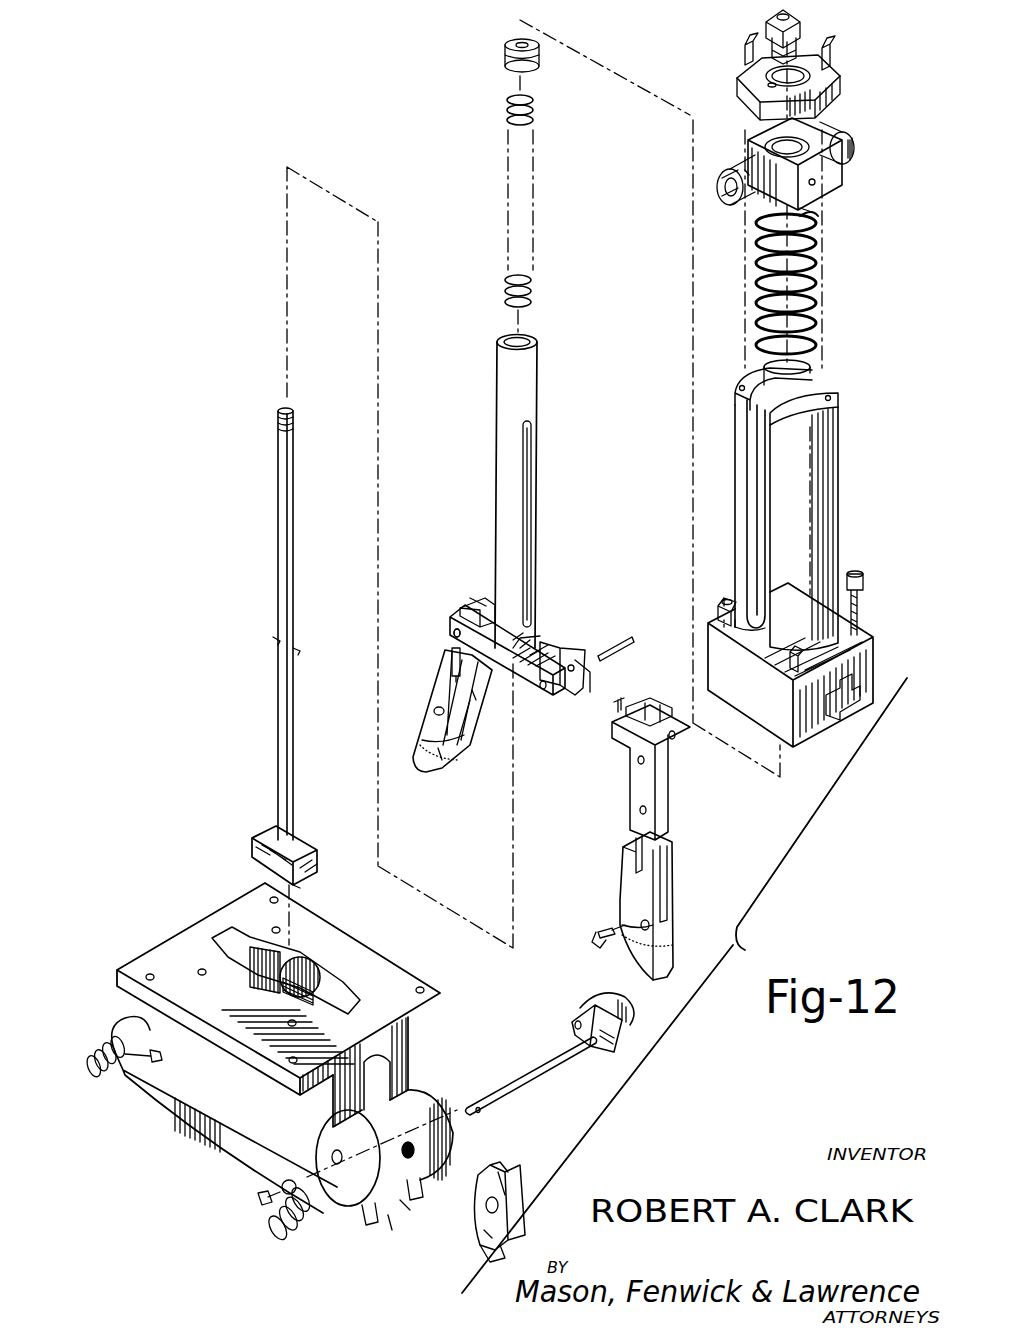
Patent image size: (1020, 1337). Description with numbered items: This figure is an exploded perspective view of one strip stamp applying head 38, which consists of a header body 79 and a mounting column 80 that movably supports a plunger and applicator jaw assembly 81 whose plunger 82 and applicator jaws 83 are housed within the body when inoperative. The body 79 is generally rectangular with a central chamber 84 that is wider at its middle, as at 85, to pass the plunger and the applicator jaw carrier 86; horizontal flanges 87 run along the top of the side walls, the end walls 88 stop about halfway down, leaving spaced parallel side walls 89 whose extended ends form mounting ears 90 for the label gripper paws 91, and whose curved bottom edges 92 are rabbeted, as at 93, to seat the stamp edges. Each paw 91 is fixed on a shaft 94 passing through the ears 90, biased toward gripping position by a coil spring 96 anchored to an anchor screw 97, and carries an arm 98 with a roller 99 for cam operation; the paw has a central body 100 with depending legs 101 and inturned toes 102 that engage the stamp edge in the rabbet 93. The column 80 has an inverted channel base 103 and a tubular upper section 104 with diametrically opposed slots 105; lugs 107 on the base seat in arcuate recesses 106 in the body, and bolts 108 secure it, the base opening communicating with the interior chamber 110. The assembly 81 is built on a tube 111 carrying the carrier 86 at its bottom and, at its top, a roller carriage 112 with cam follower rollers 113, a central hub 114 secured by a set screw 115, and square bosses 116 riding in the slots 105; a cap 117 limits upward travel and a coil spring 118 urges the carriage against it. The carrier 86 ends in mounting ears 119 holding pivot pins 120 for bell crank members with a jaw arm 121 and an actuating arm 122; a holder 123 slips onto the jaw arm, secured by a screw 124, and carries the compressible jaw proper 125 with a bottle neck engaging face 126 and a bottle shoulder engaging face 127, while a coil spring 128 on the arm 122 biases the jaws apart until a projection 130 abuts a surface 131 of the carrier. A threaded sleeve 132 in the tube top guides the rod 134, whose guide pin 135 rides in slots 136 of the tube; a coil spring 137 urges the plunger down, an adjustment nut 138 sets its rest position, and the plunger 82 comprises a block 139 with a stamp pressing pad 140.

The stamp applying head 38 is at (220, 650).
The header body 79 is at (427, 1056).
The mounting column 80 is at (852, 513).
The plunger and applicator jaw assembly 81 is at (470, 518).
The plunger 82 is at (300, 840).
The applicator jaws 83 is at (445, 695).
The central chamber 84 is at (245, 945).
The wider middle portion of central chamber 85 is at (278, 989).
The applicator jaw carrier 86 is at (540, 640).
The flanges 87 is at (443, 1003).
The end walls 88 is at (380, 1085).
The side walls 89 is at (372, 1230).
The mounting ears 90 is at (405, 1115).
The label gripper paw 91 is at (514, 1190).
The bottom edges of side walls 92 is at (215, 1170).
The rabbet 93 is at (392, 1226).
The shaft 94 is at (535, 1082).
The coil spring 96 is at (132, 1078).
The anchor screw 97 is at (163, 1055).
The arm 98 is at (605, 1025).
The roller 99 is at (610, 998).
The central body of gripper paw 100 is at (510, 1212).
The depending legs 101 is at (475, 1250).
The inturned toes 102 is at (440, 1250).
The base of mounting column 103 is at (873, 648).
The tubular upper section 104 is at (838, 448).
The slots 105 is at (818, 385).
The arcuate recesses 106 is at (320, 955).
The projecting lugs 107 is at (838, 718).
The bolts 108 is at (858, 600).
The interior chamber 110 is at (760, 380).
The tube 111 is at (538, 392).
The roller carriage 112 is at (760, 135).
The cam follower rollers 113 is at (850, 160).
The central hub 114 is at (815, 208).
The set screw 115 is at (818, 183).
The square bosses 116 is at (825, 128).
The cap 117 is at (840, 80).
The coil spring 118 is at (815, 290).
The mounting ears 119 is at (470, 602).
The jaw mounting pivot pins 120 is at (452, 636).
The jaw arm 121 is at (450, 660).
The actuating arm 122 is at (640, 725).
The holder 123 is at (485, 720).
The screw 124 is at (432, 720).
The jaw proper 125 is at (445, 765).
The bottle neck engaging face 126 is at (495, 700).
The bottle shoulder engaging face 127 is at (455, 770).
The coil spring 128 is at (640, 690).
The projection 130 is at (494, 605).
The surface of jaw carrier 131 is at (565, 650).
The threaded sleeve 132 is at (505, 62).
The rod 134 is at (278, 558).
The guide pin 135 is at (296, 645).
The slots in tube 136 is at (531, 478).
The coil spring 137 is at (538, 110).
The adjustment nut 138 is at (800, 50).
The block 139 is at (258, 836).
The stamp pressing pad 140 is at (312, 875).